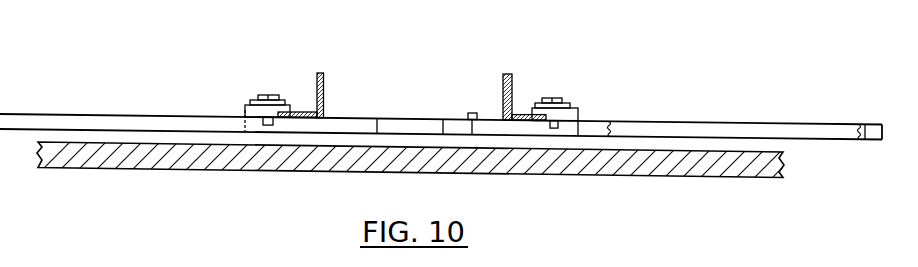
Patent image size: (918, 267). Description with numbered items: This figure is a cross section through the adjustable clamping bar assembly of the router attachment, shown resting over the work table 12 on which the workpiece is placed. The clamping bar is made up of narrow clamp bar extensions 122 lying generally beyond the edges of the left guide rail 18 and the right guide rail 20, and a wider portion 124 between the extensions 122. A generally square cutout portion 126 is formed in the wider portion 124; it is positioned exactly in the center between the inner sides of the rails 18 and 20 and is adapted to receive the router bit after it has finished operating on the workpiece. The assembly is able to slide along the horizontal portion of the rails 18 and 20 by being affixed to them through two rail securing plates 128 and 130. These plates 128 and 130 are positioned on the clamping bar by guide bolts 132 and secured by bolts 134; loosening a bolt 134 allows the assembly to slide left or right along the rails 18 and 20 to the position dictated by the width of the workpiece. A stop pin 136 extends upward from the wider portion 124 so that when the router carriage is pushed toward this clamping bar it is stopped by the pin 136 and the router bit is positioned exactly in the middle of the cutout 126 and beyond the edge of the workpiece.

The work table 12 is at (742, 173).
The left guide rail 18 is at (324, 80).
The right guide rail 20 is at (503, 92).
The clamp bar extension 122 is at (114, 99).
The wider portion 124 is at (371, 103).
The cutout portion 126 is at (379, 120).
The rail securing plate 128 is at (243, 112).
The rail securing plate 130 is at (580, 118).
The guide bolt 132 is at (259, 99).
The bolt 134 is at (264, 95).
The stop pin 136 is at (472, 113).